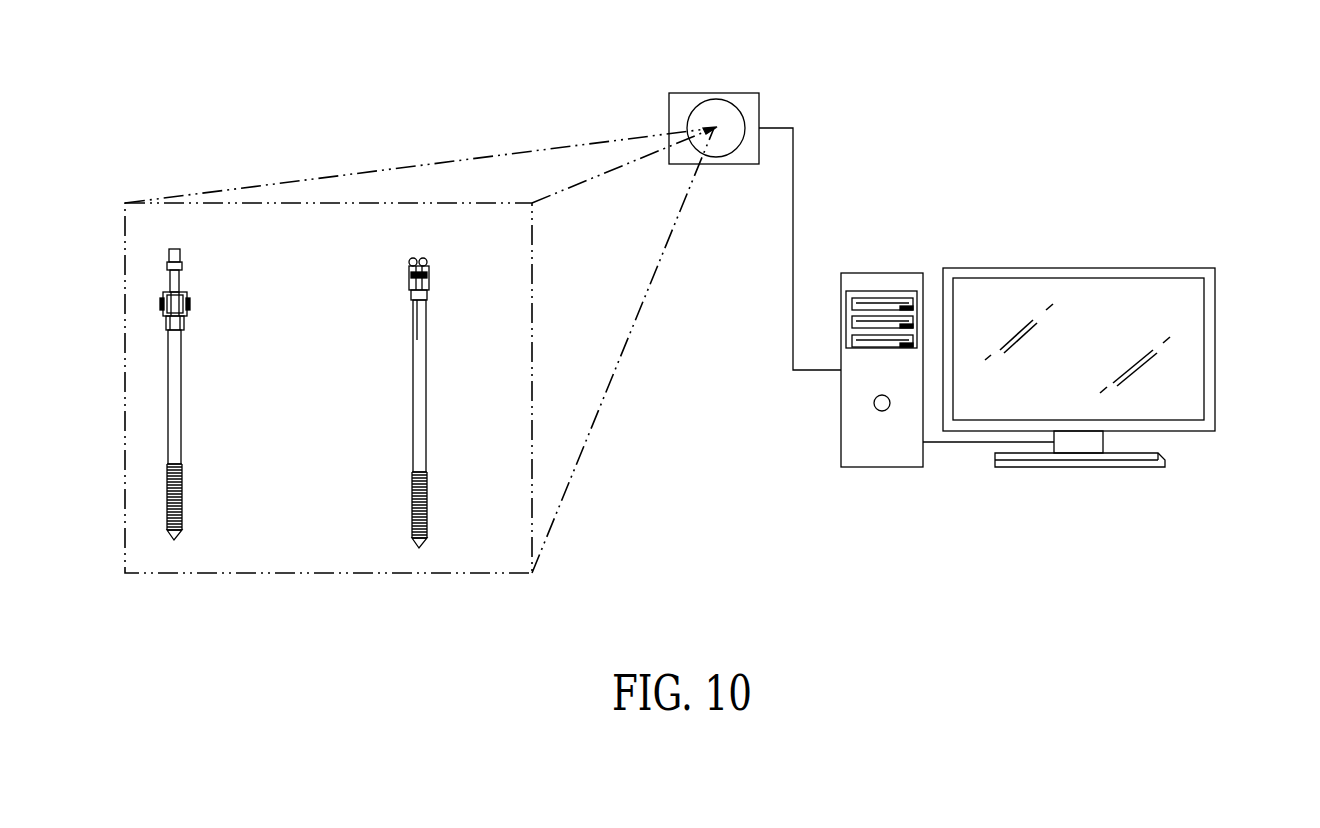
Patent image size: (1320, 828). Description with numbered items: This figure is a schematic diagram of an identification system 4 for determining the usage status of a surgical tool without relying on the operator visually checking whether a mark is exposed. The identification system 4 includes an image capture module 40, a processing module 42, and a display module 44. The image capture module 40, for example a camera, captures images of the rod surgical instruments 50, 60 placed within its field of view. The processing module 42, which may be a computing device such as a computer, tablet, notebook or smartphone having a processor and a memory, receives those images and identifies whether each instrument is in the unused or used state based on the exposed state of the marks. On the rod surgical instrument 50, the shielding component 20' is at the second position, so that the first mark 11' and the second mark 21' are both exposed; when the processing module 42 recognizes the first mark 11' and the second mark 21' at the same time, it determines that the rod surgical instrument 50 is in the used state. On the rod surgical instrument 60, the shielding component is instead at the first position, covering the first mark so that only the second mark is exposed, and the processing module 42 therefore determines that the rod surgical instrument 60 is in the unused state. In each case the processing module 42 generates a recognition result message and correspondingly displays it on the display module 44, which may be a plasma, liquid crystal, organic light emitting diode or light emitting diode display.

The identification system 4 is at (1062, 300).
The image capture module 40 is at (744, 93).
The processing module 42 is at (903, 272).
The display module 44 is at (1215, 297).
The first mark 11' is at (223, 261).
The shielding component 20' is at (221, 291).
The second mark 21' is at (215, 336).
The rod surgical instrument 50 is at (221, 385).
The rod surgical instrument 60 is at (423, 392).